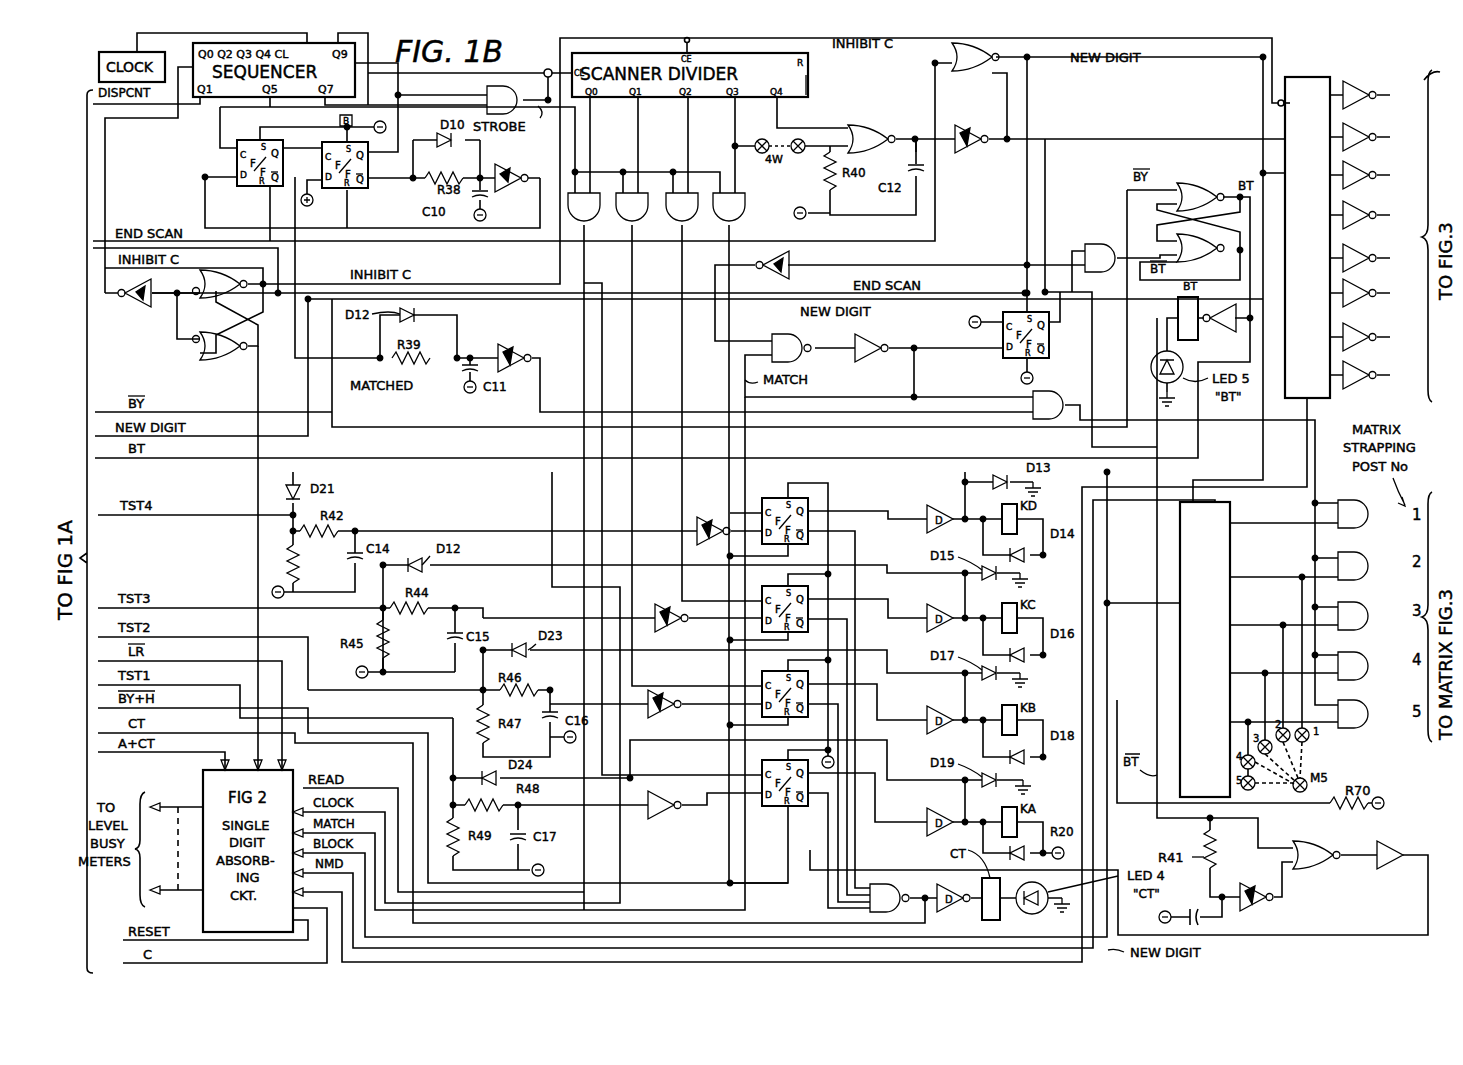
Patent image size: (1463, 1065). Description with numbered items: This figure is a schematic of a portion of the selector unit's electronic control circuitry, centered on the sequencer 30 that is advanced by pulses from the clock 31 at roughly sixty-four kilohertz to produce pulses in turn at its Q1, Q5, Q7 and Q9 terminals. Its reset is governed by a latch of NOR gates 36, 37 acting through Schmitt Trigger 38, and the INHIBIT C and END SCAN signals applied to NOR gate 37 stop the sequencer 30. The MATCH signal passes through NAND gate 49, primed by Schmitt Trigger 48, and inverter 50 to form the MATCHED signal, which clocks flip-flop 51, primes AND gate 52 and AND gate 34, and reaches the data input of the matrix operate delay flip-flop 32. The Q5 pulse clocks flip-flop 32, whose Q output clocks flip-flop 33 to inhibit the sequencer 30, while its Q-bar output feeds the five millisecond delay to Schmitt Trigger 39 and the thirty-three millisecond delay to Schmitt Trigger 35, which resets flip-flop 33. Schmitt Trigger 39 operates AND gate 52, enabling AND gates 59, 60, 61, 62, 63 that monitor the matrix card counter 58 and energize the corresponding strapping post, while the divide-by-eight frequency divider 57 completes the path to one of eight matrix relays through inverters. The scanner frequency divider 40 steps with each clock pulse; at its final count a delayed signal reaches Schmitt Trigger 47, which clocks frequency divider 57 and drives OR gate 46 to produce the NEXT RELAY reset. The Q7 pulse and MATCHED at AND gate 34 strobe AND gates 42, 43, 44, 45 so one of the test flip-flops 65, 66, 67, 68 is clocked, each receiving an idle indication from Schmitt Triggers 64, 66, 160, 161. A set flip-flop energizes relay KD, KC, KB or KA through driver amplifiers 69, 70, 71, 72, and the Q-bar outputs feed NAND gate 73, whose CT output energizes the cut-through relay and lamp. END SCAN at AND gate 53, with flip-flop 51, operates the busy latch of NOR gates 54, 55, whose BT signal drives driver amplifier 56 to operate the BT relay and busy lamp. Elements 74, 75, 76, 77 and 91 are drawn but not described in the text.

The sequencer 30 is at (198, 102).
The clock 31 is at (99, 70).
The matrix operate delay flip-flop 32 is at (362, 190).
The flip-flop 33 is at (258, 188).
The AND gate 34 is at (520, 104).
The Schmitt Trigger 35 is at (520, 190).
The NOR gate 36 is at (222, 362).
The NOR gate 37 is at (214, 300).
The Schmitt Trigger 38 is at (135, 306).
The Schmitt Trigger 39 is at (506, 346).
The scanner frequency divider 40 is at (808, 85).
The AND gate 42 is at (586, 221).
The AND gate 43 is at (634, 221).
The AND gate 44 is at (684, 221).
The AND gate 45 is at (733, 221).
The OR gate 46 is at (968, 71).
The Schmitt Trigger 47 is at (962, 125).
The Schmitt Trigger 48 is at (790, 254).
The NAND gate 49 is at (802, 358).
The inverter 50 is at (862, 358).
The flip-flop 51 is at (1003, 358).
The AND gate 52 is at (1045, 398).
The AND gate 53 is at (1095, 244).
The NOR gate 54 is at (1190, 184).
The NOR gate 55 is at (1203, 258).
The driver amplifier 56 is at (1225, 330).
The matrix relay frequency divider 57 is at (1296, 77).
The matrix card counter 58 is at (1230, 512).
The AND gate 59 is at (1368, 526).
The AND gate 60 is at (1368, 578).
The AND gate 61 is at (1368, 628).
The AND gate 62 is at (1368, 678).
The AND gate 63 is at (1366, 726).
The Schmitt Trigger 64 is at (706, 525).
The test flip-flop 65 is at (776, 498).
The test flip-flop 66 is at (778, 586).
The test flip-flop 67 is at (776, 671).
The test flip-flop 68 is at (775, 806).
The driver amplifier 69 is at (944, 510).
The driver amplifier 70 is at (944, 610).
The driver amplifier 71 is at (944, 712).
The driver amplifier 72 is at (944, 814).
The NAND gate 73 is at (898, 890).
The driver 74 is at (956, 912).
The inverter 75 is at (1258, 908).
The NOR gate 76 is at (1325, 868).
The buffer 77 is at (1390, 868).
The NOR gate 91 is at (866, 125).
The Schmitt Trigger 160 is at (656, 714).
The Schmitt Trigger 161 is at (652, 818).